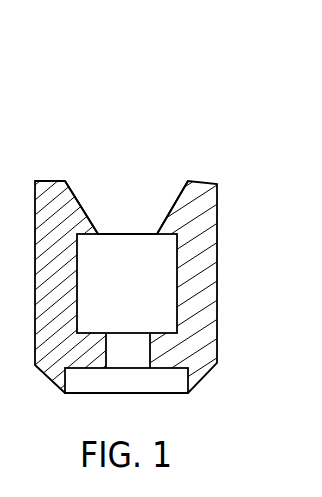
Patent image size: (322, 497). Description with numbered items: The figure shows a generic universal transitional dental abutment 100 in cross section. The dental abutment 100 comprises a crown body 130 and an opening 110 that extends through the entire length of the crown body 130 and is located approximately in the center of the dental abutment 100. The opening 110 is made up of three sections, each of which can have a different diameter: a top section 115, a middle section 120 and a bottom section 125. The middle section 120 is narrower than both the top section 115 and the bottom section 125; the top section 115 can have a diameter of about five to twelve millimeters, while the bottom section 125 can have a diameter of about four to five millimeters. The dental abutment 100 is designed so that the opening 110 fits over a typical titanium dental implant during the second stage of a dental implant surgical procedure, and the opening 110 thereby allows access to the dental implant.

The dental abutment 100 is at (162, 116).
The opening 110 is at (117, 213).
The top section 115 is at (177, 290).
The middle section 120 is at (150, 351).
The bottom section 125 is at (188, 380).
The crown body 130 is at (197, 198).